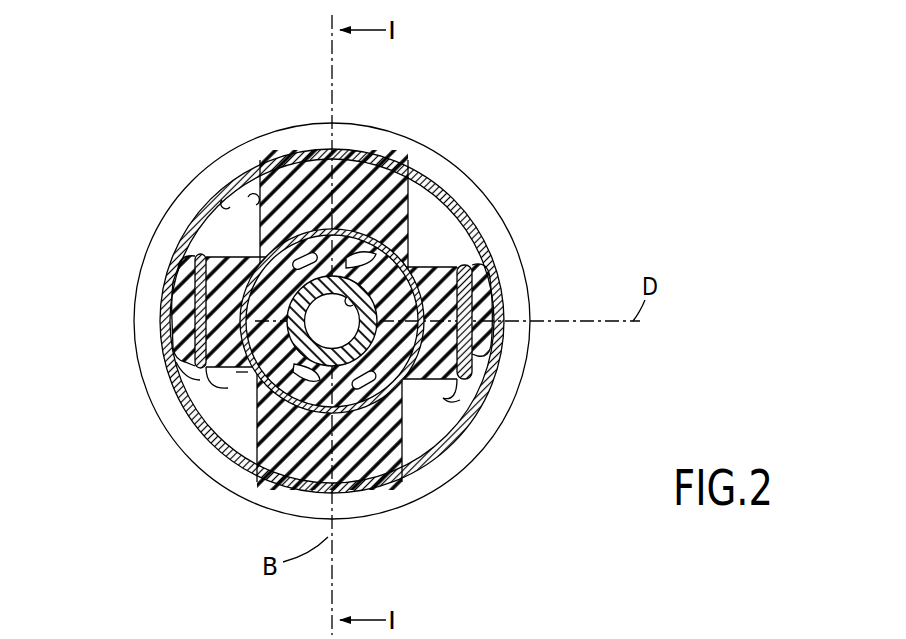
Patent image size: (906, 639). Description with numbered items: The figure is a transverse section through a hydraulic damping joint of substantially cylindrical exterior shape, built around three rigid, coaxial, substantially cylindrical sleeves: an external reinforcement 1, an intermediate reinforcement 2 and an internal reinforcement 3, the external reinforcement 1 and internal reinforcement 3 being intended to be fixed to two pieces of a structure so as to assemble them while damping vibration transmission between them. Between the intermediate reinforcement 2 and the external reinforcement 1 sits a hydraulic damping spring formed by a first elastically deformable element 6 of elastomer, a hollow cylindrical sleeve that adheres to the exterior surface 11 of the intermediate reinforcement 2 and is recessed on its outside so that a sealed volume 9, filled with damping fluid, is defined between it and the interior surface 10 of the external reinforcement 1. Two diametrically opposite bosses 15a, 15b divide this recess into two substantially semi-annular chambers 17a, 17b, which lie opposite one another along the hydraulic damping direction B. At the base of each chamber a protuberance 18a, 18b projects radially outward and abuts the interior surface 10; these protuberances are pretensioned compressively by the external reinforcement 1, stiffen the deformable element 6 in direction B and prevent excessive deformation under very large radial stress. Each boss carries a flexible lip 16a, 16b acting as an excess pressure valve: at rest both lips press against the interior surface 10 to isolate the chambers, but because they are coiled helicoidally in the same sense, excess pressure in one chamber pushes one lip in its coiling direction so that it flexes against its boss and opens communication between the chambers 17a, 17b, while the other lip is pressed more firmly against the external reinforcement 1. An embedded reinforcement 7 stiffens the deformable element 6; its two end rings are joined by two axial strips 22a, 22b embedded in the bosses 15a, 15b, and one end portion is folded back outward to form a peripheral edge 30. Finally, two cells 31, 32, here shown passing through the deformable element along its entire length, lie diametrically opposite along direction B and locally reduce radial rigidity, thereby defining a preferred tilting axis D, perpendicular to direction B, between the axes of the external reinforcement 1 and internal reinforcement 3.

The external reinforcement 1 is at (186, 220).
The intermediate reinforcement 2 is at (212, 398).
The internal reinforcement 3 is at (410, 267).
The first elastically deformable element 6 is at (230, 205).
The embedded reinforcement 7 is at (352, 298).
The sealed volume 9 is at (432, 415).
The interior surface 10 is at (253, 202).
The exterior surface 11 is at (238, 258).
The boss 15a is at (190, 272).
The boss 15b is at (476, 288).
The flexible lip 16a is at (171, 302).
The flexible lip 16b is at (494, 372).
The chamber 17a is at (436, 216).
The chamber 17b is at (237, 419).
The protuberance 18a is at (420, 203).
The protuberance 18b is at (410, 478).
The strip 22a is at (245, 374).
The strip 22b is at (456, 378).
The peripheral edge 30 is at (295, 127).
The cell 31 is at (356, 152).
The cell 32 is at (282, 468).